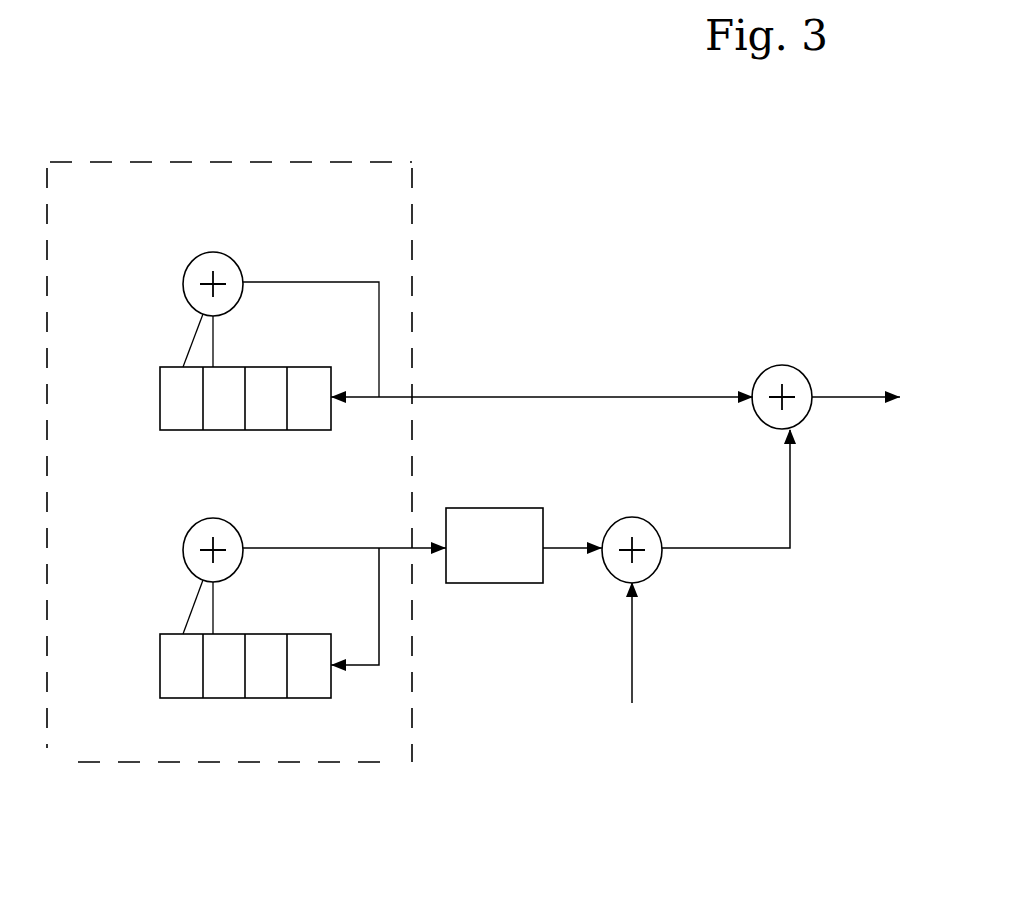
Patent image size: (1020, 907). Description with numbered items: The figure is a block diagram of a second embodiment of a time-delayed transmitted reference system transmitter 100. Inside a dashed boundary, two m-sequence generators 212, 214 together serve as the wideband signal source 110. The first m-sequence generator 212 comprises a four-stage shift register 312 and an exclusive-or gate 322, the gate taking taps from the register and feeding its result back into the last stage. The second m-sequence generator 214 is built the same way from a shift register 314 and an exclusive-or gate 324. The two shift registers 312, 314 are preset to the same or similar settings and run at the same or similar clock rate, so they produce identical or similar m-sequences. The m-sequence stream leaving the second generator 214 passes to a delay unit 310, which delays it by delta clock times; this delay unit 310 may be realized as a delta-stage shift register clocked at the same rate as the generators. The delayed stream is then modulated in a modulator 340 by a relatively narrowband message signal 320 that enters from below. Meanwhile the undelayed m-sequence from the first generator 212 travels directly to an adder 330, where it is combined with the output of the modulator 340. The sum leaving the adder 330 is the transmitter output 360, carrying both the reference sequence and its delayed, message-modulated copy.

The time-delayed transmitted reference system transmitter 100 is at (672, 157).
The wideband signal source 110 is at (360, 170).
The m-sequence generator 212 is at (150, 322).
The m-sequence generator 214 is at (169, 612).
The shift register 312 is at (160, 370).
The shift register 314 is at (173, 698).
The exclusive-or gate 322 is at (241, 260).
The exclusive-or gate 324 is at (242, 524).
The delay unit 310 is at (482, 508).
The modulator 340 is at (660, 524).
The adder 330 is at (796, 364).
The message signal 320 is at (634, 700).
The output 360 is at (858, 400).